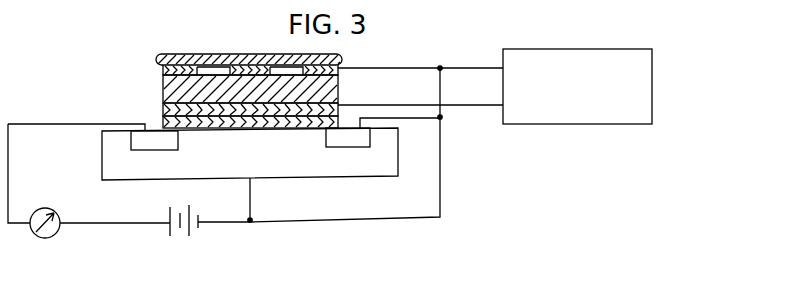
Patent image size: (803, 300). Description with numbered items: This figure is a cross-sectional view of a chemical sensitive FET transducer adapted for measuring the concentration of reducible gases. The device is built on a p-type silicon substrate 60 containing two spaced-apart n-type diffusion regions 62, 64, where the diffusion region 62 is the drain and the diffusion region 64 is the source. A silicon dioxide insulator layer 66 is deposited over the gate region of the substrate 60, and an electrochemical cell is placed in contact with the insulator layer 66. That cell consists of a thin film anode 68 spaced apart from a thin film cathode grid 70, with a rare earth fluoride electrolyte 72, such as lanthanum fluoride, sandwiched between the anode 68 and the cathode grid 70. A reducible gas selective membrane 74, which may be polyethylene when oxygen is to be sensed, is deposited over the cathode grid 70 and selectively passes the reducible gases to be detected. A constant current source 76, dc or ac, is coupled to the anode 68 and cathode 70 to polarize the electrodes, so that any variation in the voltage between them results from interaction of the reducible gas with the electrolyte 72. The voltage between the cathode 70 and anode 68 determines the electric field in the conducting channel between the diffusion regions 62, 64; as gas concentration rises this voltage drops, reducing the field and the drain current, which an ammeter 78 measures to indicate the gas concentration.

The p-type silicon substrate 60 is at (282, 170).
The n-type diffusion region 62 is at (147, 150).
The n-type diffusion region 64 is at (358, 142).
The silicon dioxide insulator layer 66 is at (163, 121).
The thin film anode 68 is at (163, 108).
The thin film cathode grid 70 is at (330, 71).
The rare earth fluoride electrolyte 72 is at (340, 87).
The reducible gas selective membrane 74 is at (178, 61).
The constant current source 76 is at (565, 124).
The ammeter 78 is at (50, 238).